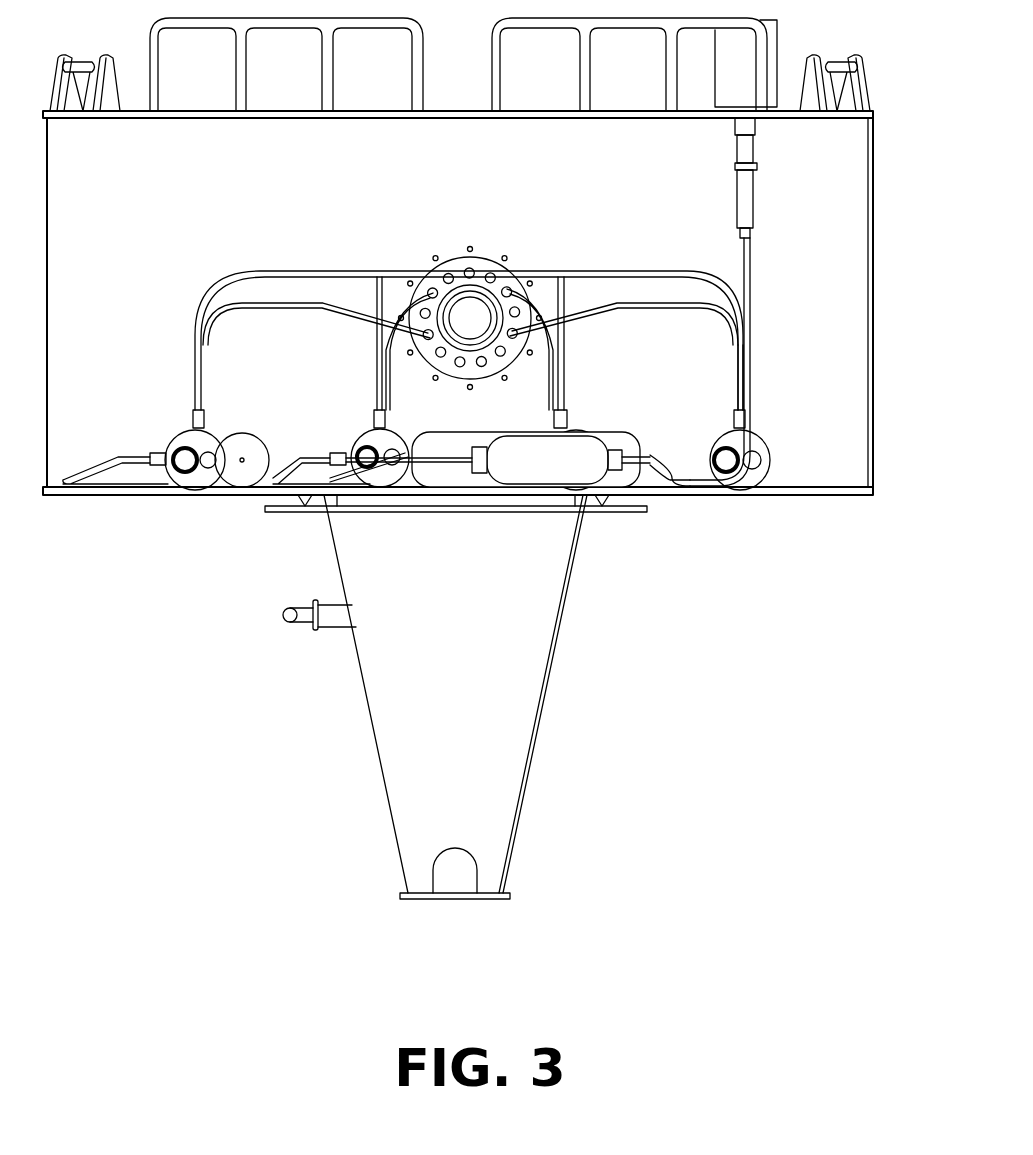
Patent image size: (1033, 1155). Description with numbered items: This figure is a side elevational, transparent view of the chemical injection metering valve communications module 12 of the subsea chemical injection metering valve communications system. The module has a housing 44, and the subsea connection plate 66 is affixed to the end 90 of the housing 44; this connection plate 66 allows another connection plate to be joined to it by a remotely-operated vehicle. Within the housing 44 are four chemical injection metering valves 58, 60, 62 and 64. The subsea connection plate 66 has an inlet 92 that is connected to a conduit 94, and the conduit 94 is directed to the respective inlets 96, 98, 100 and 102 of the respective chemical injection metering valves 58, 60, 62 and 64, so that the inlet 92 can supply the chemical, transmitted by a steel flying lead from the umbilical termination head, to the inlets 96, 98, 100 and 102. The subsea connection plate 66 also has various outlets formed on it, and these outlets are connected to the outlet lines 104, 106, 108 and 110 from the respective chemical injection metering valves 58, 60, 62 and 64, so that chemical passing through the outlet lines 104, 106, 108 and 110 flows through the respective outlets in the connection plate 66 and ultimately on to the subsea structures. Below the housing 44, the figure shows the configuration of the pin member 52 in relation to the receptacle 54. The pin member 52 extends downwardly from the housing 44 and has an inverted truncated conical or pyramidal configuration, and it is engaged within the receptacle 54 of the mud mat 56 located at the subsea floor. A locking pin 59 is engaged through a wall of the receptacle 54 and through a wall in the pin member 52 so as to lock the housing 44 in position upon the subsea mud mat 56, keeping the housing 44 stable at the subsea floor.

The chemical injection metering valve communications module 12 is at (873, 212).
The housing 44 is at (873, 272).
The end of the housing 90 is at (855, 333).
The conduit 94 is at (358, 270).
The inlet 92 is at (470, 265).
The subsea connection plate 66 is at (493, 262).
The outlet line 110 is at (250, 312).
The outlet line 104 is at (678, 312).
The outlet line 108 is at (400, 347).
The outlet line 106 is at (543, 343).
The inlet 102 is at (192, 420).
The chemical injection metering valve 64 is at (218, 428).
The inlet 100 is at (374, 417).
The inlet 98 is at (580, 418).
The chemical injection metering valve 58 is at (770, 442).
The chemical injection metering valve 62 is at (415, 440).
The chemical injection metering valve 60 is at (620, 432).
The inlet 96 is at (735, 418).
The pin member 52 is at (533, 650).
The receptacle 54 is at (535, 740).
The mud mat 56 is at (490, 896).
The locking pin 59 is at (298, 610).